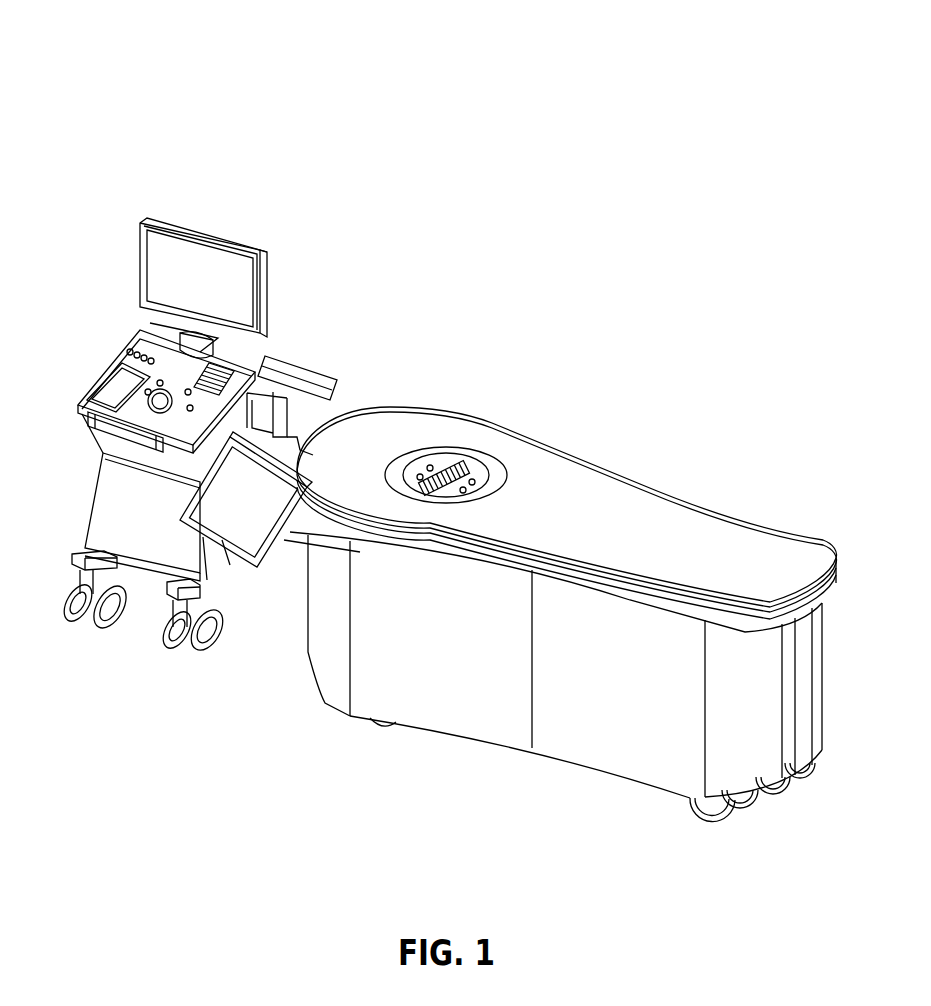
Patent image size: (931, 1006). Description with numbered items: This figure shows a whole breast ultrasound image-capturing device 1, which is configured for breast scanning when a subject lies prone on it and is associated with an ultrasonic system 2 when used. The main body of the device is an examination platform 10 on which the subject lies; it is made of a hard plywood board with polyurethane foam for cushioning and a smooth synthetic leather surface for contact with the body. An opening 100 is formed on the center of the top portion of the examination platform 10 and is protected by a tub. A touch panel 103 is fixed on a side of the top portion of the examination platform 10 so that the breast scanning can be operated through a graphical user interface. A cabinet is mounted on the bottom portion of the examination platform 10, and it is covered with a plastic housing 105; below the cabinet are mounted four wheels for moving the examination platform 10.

The whole breast ultrasound image-capturing device 1 is at (556, 84).
The ultrasonic system 2 is at (163, 353).
The examination platform 10 is at (477, 458).
The opening 100 is at (447, 445).
The touch panel 103 is at (245, 533).
The plastic housing 105 is at (623, 753).